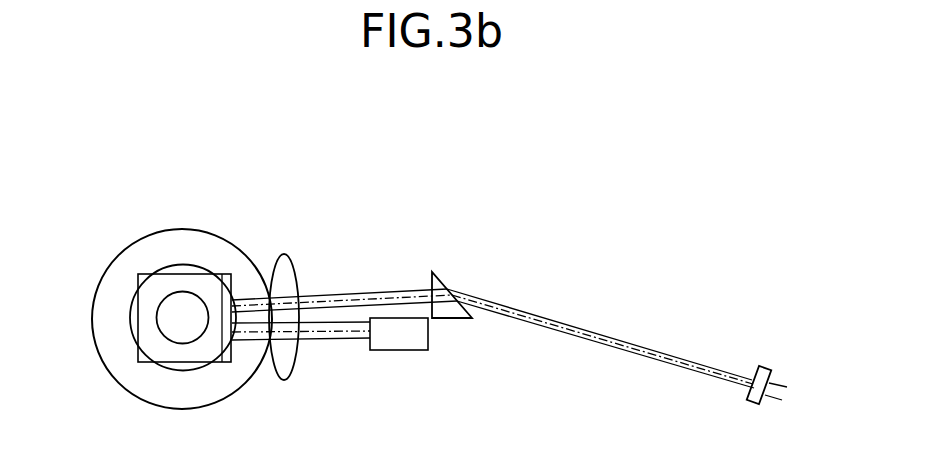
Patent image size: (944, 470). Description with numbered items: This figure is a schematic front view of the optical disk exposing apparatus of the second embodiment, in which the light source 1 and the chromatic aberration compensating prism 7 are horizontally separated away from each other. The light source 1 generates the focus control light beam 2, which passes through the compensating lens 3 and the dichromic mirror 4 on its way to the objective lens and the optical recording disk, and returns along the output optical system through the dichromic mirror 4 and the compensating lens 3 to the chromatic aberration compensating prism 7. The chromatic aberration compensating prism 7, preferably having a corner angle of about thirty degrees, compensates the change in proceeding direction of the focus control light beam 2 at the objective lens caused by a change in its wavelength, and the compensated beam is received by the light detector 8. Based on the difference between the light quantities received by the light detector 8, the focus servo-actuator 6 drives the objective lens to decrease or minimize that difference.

The light source 1 is at (183, 298).
The focus control light beam 2 is at (332, 340).
The compensating lens 3 is at (292, 262).
The dichromic mirror 4 is at (203, 285).
The focus servo-actuator 6 is at (142, 255).
The chromatic aberration compensating prism 7 is at (448, 285).
The light detector 8 is at (763, 367).